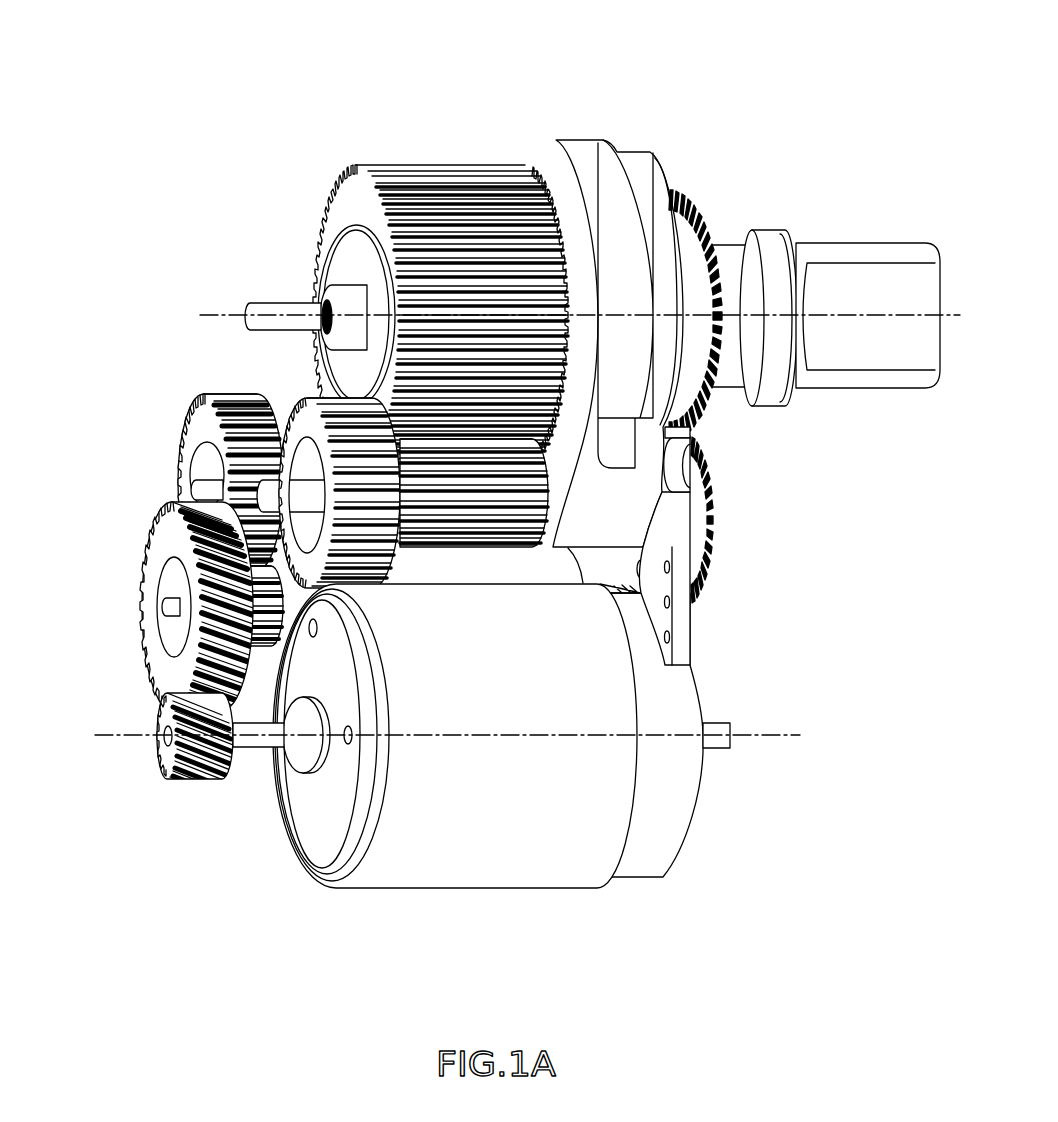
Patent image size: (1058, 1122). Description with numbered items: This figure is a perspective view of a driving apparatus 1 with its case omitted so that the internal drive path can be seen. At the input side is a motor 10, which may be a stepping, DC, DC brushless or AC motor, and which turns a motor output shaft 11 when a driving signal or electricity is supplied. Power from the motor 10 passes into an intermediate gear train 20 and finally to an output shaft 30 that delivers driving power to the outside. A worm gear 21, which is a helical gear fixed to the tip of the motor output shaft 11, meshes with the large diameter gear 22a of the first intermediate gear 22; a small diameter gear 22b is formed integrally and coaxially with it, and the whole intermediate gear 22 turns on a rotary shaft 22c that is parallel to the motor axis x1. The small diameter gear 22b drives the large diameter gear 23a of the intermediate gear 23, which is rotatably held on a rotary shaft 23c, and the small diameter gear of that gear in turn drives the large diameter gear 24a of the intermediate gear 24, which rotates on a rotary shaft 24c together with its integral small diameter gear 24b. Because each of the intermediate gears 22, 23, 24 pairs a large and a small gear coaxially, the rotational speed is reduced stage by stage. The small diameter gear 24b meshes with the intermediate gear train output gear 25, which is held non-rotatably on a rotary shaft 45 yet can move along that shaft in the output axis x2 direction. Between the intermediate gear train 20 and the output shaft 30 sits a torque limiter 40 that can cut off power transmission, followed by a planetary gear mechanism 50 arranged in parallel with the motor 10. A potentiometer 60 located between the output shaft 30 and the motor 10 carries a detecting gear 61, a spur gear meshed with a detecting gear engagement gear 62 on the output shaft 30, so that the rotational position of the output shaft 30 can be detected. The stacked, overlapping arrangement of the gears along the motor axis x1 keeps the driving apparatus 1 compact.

The driving apparatus 1 is at (502, 500).
The motor 10 is at (418, 897).
The motor output shaft 11 is at (262, 750).
The intermediate gear train 20 is at (306, 427).
The worm gear 21 is at (160, 752).
The intermediate gear 22 is at (193, 615).
The large diameter gear 22a is at (143, 620).
The small diameter gear 22b is at (265, 640).
The rotary shaft 22c is at (165, 590).
The intermediate gear 23 is at (179, 475).
The large diameter gear 23a is at (183, 443).
The rotary shaft 23c is at (208, 486).
The intermediate gear 24 is at (372, 492).
The large diameter gear 24a is at (380, 585).
The small diameter gear 24b is at (515, 547).
The rotary shaft 24c is at (330, 505).
The intermediate gear train output gear 25 is at (456, 145).
The output shaft 30 is at (862, 205).
The torque limiter 40 is at (295, 237).
The rotary shaft 45 is at (268, 298).
The planetary gear mechanism 50 is at (582, 115).
The potentiometer 60 is at (710, 627).
The detecting gear 61 is at (718, 541).
The detecting gear engagement gear 62 is at (712, 396).
The motor axis x1 is at (105, 725).
The output axis x2 is at (208, 306).